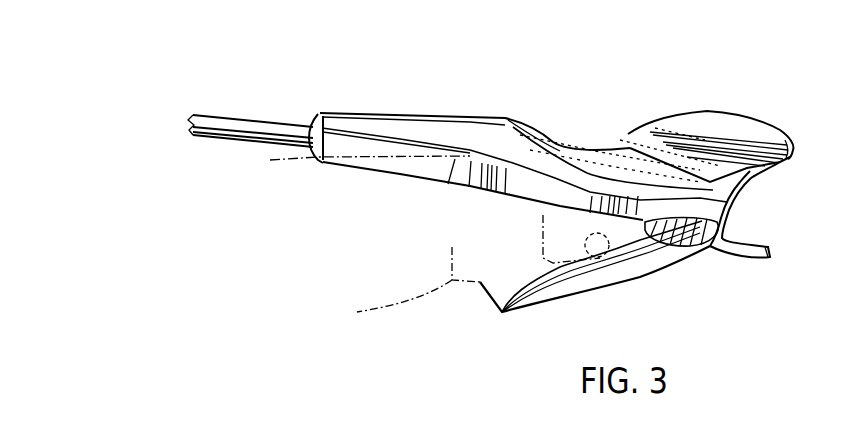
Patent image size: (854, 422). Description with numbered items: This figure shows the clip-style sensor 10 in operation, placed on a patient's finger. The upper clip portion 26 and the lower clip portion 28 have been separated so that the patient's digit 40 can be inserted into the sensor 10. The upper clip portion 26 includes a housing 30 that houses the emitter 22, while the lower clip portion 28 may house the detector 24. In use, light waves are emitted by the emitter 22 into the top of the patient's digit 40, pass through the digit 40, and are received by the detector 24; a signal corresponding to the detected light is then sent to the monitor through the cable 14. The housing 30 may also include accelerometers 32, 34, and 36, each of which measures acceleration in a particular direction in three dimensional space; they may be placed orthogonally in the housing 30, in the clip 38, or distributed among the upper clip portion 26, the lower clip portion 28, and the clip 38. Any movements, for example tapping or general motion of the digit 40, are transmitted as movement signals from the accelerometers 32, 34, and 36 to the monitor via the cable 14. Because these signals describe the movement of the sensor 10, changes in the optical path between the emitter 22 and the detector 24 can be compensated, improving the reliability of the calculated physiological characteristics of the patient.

The sensor 10 is at (604, 61).
The cable 14 is at (238, 117).
The emitter 22 is at (598, 130).
The detector 24 is at (606, 258).
The upper clip portion 26 is at (440, 124).
The lower clip portion 28 is at (640, 268).
The housing 30 is at (758, 124).
The accelerometer 32 is at (655, 150).
The accelerometer 34 is at (543, 213).
The accelerometer 36 is at (543, 130).
The clip 38 is at (778, 167).
The patient's digit 40 is at (401, 305).